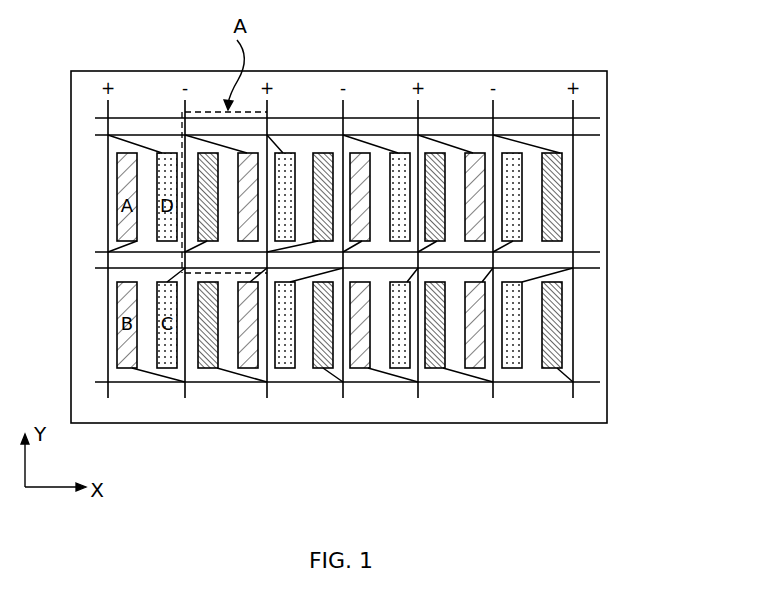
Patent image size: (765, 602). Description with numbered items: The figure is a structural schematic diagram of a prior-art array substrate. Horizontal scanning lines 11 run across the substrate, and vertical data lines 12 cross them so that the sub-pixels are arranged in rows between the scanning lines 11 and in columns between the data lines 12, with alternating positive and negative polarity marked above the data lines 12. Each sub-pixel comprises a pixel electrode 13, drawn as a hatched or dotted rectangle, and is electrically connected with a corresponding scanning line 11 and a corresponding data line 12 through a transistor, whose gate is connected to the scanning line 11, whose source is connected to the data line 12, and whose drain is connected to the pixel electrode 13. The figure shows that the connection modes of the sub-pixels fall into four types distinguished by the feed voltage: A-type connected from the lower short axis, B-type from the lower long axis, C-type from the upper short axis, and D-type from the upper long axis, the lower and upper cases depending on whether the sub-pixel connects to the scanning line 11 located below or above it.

The scanning line 11 is at (590, 135).
The data line 12 is at (571, 180).
The pixel electrode 13 is at (557, 223).